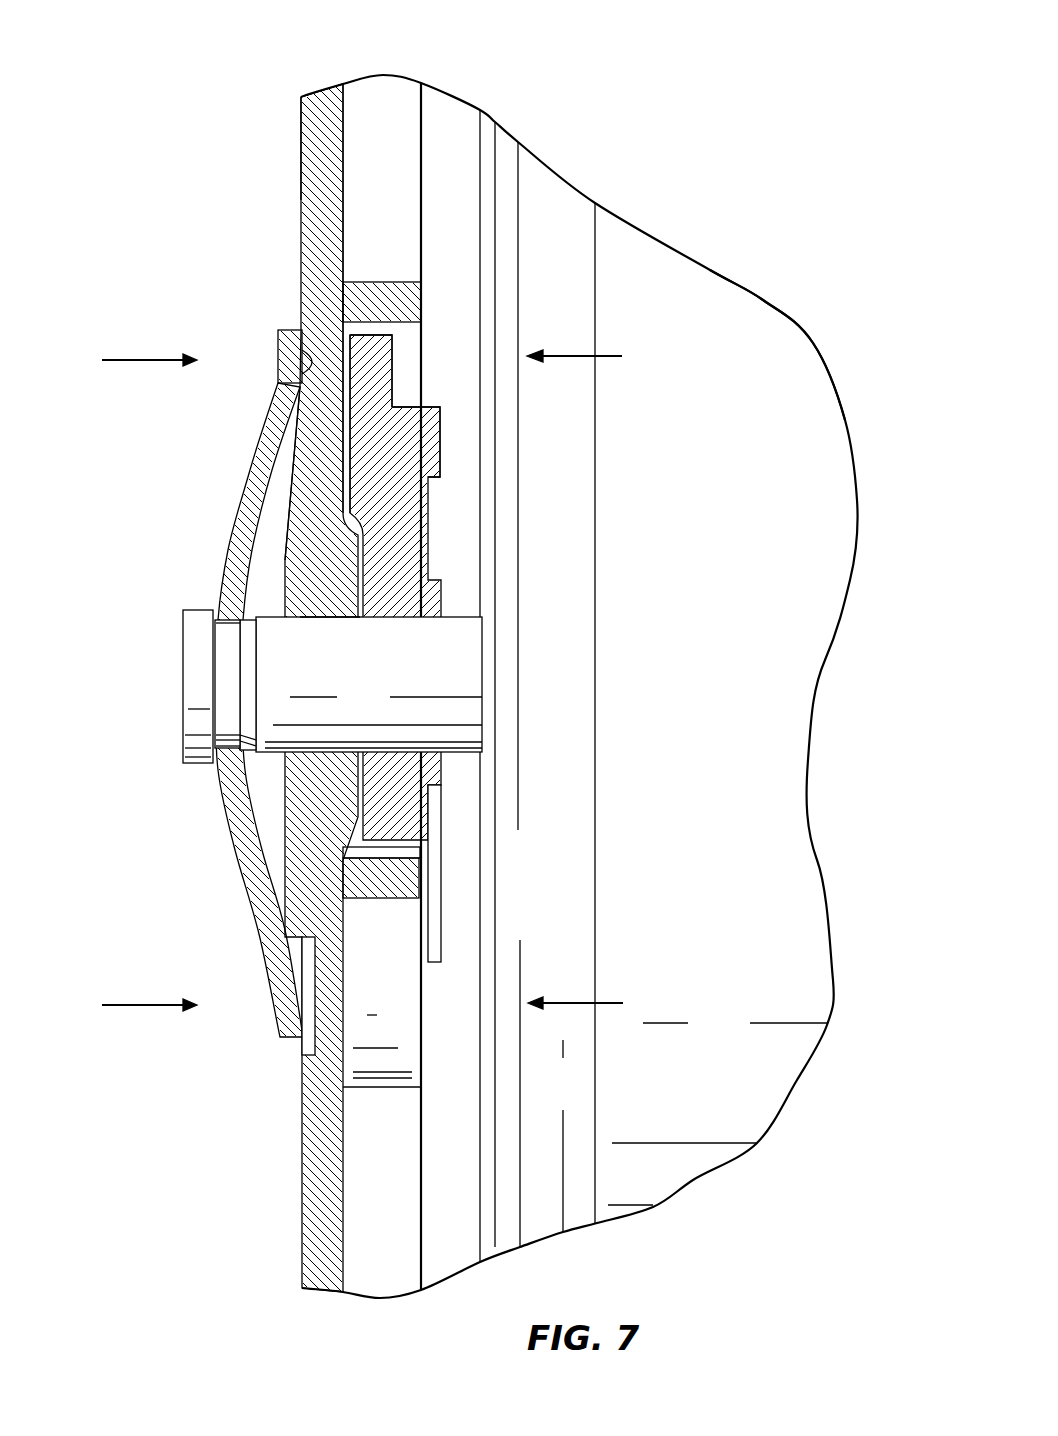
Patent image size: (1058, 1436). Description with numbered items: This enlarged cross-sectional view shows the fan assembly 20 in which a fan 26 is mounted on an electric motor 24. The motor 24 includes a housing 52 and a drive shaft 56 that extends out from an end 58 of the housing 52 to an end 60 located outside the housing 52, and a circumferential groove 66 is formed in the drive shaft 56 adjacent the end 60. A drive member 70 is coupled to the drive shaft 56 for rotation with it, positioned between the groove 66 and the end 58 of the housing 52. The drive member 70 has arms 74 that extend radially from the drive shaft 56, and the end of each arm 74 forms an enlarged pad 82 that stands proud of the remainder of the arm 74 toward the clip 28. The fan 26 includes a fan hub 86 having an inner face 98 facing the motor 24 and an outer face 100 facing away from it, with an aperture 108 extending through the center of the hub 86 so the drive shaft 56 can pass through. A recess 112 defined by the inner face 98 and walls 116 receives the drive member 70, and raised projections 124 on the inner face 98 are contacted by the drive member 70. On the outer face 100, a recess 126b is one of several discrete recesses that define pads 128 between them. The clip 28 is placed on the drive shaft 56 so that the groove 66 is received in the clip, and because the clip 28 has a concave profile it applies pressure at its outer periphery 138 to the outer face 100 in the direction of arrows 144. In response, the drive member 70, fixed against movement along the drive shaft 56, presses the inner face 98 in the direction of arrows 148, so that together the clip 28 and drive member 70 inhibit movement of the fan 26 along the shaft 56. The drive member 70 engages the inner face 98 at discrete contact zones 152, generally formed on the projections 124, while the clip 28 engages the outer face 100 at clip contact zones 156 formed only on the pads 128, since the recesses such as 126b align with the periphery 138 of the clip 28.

The fan assembly 20 is at (702, 167).
The electric motor 24 is at (668, 268).
The fan 26 is at (298, 103).
The clip 28 is at (246, 482).
The housing 52 is at (753, 320).
The drive shaft 56 is at (452, 651).
The end of the housing 58 is at (478, 163).
The end of the drive shaft 60 is at (183, 693).
The circumferential groove 66 is at (230, 668).
The drive member 70 is at (431, 543).
The arms 74 is at (441, 440).
The pad 82 is at (343, 383).
The fan hub 86 is at (301, 127).
The inner face 98 is at (343, 160).
The outer face 100 is at (301, 175).
The aperture 108 is at (330, 620).
The recess 112 is at (350, 338).
The walls 116 is at (398, 282).
The raised projections 124 is at (347, 397).
The recess 126b is at (300, 1045).
The pads 128 is at (298, 388).
The outer periphery 138 is at (313, 337).
The arrows 144 is at (142, 360).
The arrows 148 is at (573, 358).
The contact zones 152 is at (332, 293).
The clip contact zones 156 is at (278, 342).